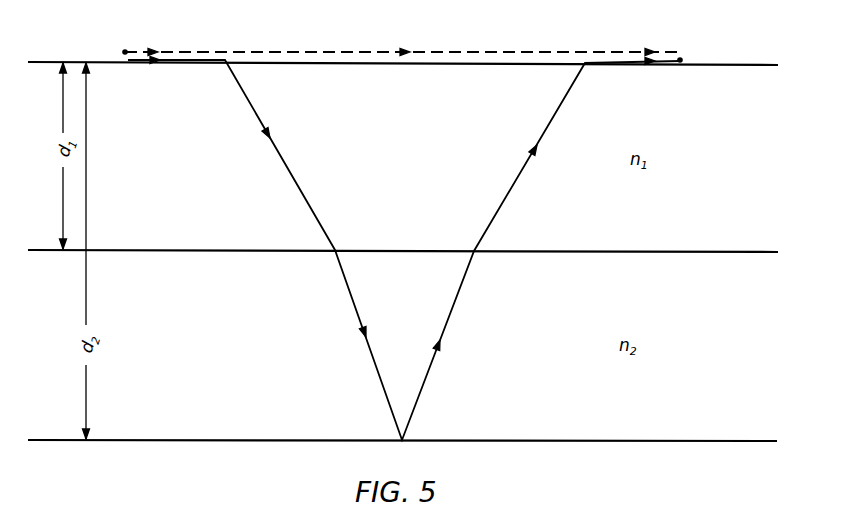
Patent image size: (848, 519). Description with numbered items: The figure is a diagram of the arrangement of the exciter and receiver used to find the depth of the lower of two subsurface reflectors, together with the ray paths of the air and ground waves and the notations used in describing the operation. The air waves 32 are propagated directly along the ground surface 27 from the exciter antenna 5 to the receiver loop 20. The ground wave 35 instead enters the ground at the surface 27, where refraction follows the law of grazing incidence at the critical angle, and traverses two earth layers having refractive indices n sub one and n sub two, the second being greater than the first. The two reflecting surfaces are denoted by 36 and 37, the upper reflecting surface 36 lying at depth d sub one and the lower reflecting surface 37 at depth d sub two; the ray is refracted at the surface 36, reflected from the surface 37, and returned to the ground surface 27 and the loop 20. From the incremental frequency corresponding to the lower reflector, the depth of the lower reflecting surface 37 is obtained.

The exciter antenna 5 is at (124, 51).
The receiver loop 20 is at (683, 58).
The ground surface 27 is at (97, 59).
The air waves 32 is at (280, 52).
The ground wave 35 is at (292, 171).
The upper reflecting surface 36 is at (228, 247).
The lower reflecting surface 37 is at (228, 437).